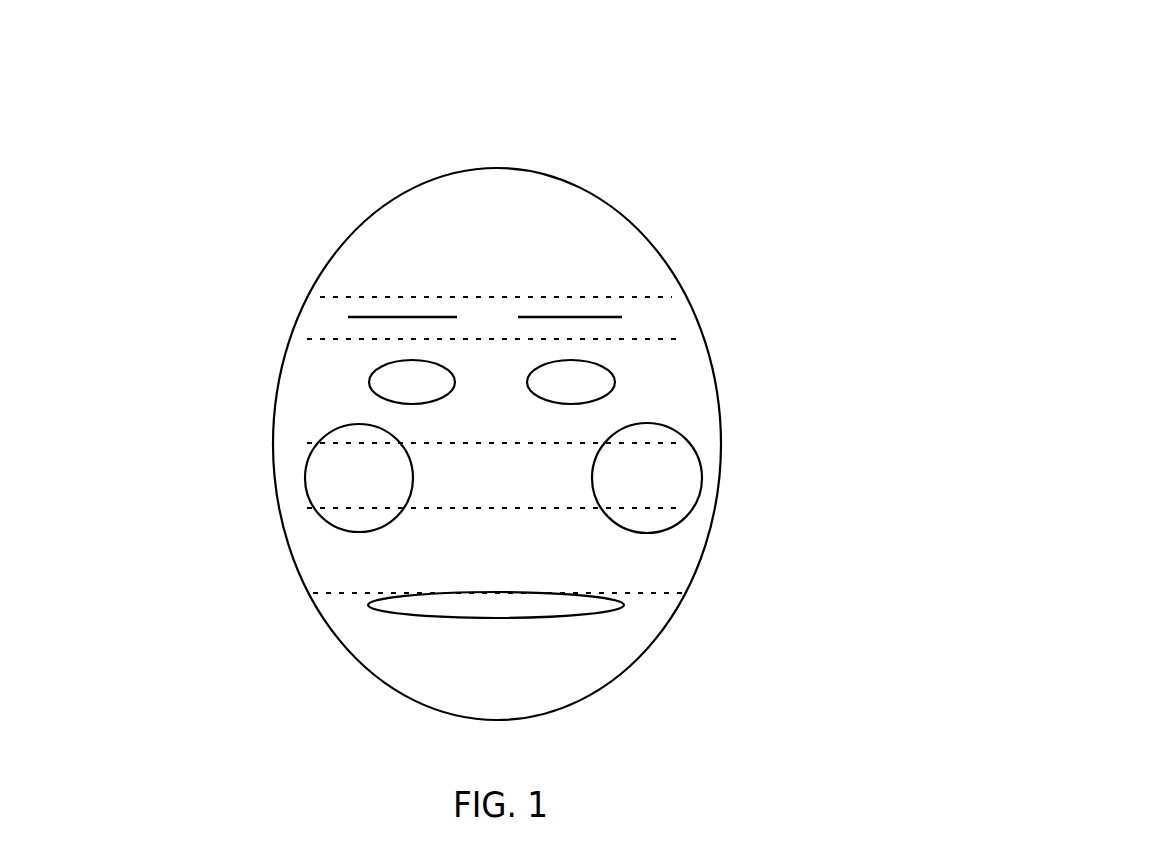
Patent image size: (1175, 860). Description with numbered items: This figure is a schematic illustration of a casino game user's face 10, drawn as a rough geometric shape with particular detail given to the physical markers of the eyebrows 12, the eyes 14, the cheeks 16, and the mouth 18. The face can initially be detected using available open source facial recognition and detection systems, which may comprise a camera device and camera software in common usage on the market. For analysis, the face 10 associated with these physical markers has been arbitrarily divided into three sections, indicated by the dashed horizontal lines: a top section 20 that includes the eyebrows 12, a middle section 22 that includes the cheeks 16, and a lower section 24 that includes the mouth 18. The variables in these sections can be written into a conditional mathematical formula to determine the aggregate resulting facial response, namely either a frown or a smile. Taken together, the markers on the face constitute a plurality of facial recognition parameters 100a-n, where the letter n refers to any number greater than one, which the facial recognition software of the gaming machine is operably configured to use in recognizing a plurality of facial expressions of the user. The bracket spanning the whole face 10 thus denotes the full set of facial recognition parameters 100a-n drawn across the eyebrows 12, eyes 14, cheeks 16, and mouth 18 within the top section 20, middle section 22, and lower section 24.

The face 10 is at (498, 168).
The eyebrows 12 is at (622, 317).
The eyes 14 is at (572, 398).
The cheeks 16 is at (700, 465).
The mouth 18 is at (683, 593).
The top section 20 is at (498, 323).
The middle section 22 is at (550, 492).
The lower section 24 is at (413, 593).
The facial recognition parameters 100a-n is at (601, 371).